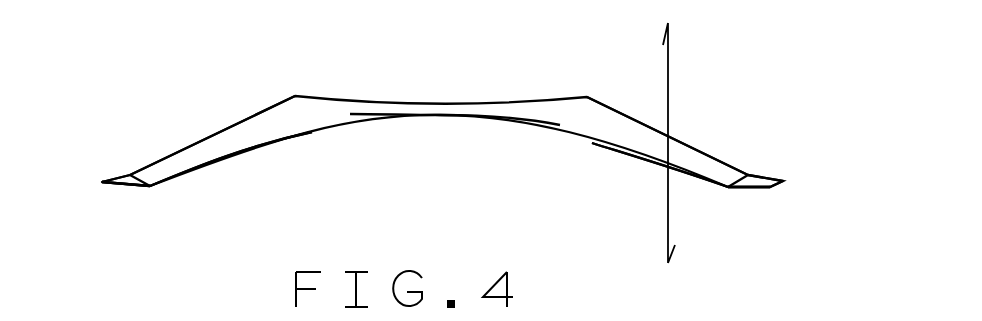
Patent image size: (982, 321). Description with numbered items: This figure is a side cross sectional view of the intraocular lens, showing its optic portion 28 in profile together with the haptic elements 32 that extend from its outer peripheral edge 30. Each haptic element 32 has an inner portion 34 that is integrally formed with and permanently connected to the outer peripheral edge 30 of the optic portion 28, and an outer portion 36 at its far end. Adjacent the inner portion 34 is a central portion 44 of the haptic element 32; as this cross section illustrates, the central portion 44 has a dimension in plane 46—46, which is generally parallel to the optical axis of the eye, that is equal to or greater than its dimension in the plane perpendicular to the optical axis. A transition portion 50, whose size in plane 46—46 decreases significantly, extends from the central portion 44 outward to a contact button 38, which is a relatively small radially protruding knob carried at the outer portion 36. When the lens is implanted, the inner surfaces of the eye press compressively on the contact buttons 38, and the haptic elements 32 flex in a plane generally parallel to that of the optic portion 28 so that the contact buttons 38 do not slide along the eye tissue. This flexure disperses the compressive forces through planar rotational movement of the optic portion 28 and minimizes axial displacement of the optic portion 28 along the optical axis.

The optic portion 28 is at (445, 103).
The outer peripheral edge 30 is at (422, 117).
The haptic element 32 is at (230, 127).
The inner portion 34 is at (312, 135).
The outer portion 36 is at (102, 182).
The contact button 38 is at (122, 188).
The central portion 44 is at (246, 142).
The plane 46— 46 is at (670, 150).
The transition portion 50 is at (145, 188).